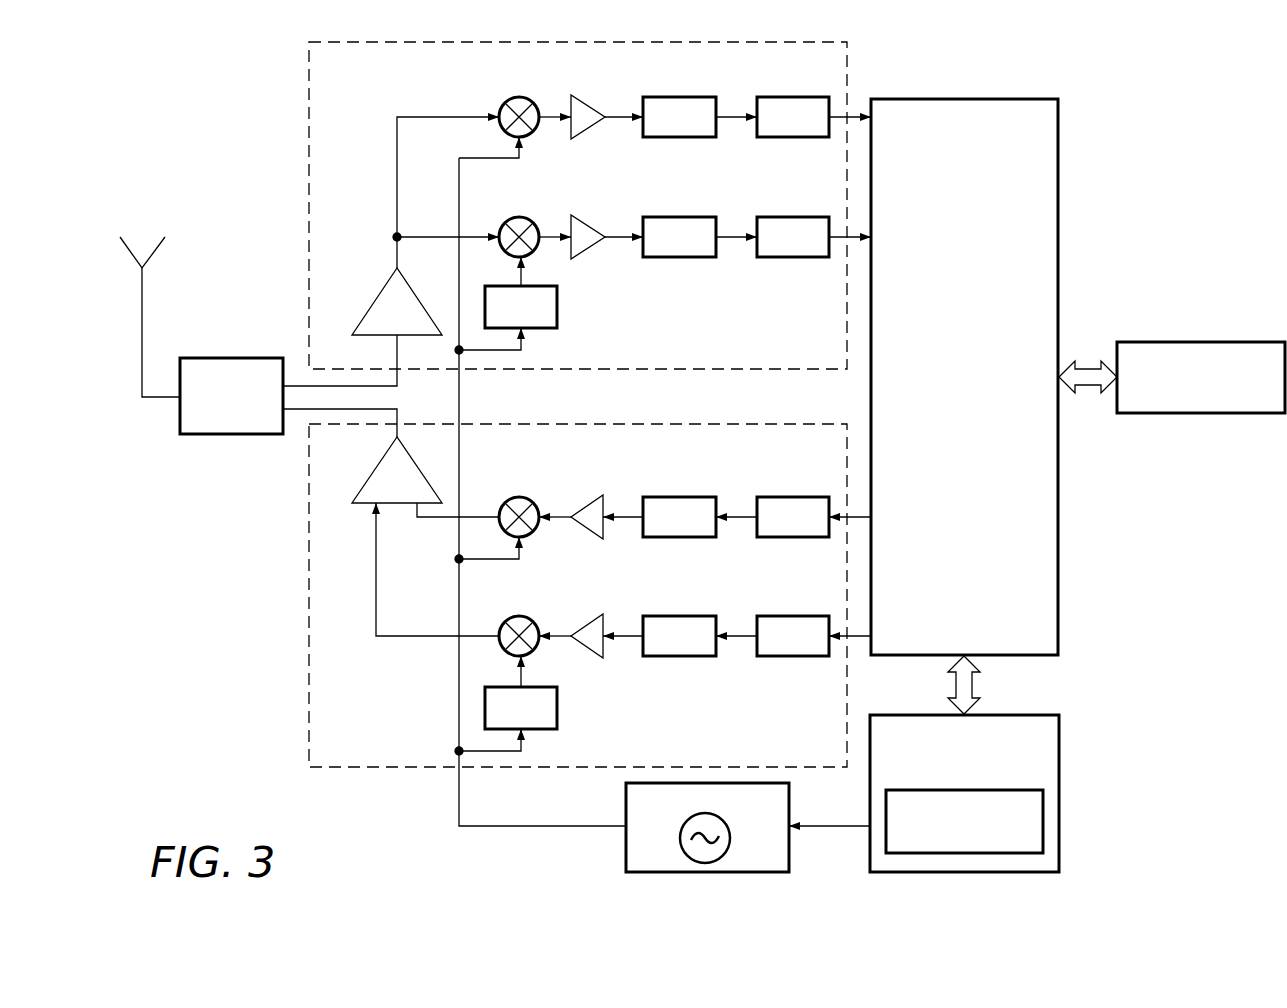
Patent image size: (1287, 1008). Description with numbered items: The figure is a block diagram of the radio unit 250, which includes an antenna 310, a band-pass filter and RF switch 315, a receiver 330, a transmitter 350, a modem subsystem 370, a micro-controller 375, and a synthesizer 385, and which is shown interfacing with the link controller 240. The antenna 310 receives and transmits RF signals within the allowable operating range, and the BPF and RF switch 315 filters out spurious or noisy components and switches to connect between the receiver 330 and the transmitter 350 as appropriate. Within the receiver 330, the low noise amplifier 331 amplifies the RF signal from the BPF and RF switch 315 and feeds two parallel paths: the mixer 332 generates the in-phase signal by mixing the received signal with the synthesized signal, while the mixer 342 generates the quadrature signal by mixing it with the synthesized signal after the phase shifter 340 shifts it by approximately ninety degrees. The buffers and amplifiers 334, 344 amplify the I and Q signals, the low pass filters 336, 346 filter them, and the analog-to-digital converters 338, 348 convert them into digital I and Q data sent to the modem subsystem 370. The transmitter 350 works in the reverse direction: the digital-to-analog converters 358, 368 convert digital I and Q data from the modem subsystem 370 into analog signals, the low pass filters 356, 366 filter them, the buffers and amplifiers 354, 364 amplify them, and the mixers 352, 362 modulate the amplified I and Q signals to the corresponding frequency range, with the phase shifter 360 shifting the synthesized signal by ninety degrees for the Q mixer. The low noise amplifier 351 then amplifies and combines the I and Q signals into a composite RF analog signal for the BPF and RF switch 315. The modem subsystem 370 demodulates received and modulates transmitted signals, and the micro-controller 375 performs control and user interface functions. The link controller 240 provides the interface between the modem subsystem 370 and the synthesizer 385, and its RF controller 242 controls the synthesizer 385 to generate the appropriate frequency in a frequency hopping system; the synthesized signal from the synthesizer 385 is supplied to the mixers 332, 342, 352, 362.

The radio unit 250 is at (1172, 78).
The receiver 330 is at (310, 67).
The transmitter 350 is at (310, 533).
The antenna 310 is at (182, 317).
The band-pass filter and radio frequency switch 315 is at (254, 366).
The low noise amplifier 331 is at (394, 281).
The mixer 332 is at (522, 98).
The buffer and amplifier 334 is at (587, 102).
The low pass filter 336 is at (650, 100).
The analog-to-digital converter 338 is at (764, 100).
The phase shifter 340 is at (557, 293).
The mixer 342 is at (522, 218).
The buffer and amplifier 344 is at (587, 222).
The low pass filter 346 is at (650, 220).
The analog-to-digital converter 348 is at (764, 220).
The low noise amplifier 351 is at (394, 452).
The mixer 352 is at (522, 497).
The buffer and amplifier 354 is at (588, 500).
The low pass filter 356 is at (650, 500).
The digital-to-analog converter 358 is at (764, 500).
The phase shifter 360 is at (557, 693).
The mixer 362 is at (522, 616).
The buffer and amplifier 364 is at (588, 620).
The low pass filter 366 is at (650, 619).
The digital-to-analog converter 368 is at (764, 619).
The modem subsystem 370 is at (902, 106).
The micro-controller 375 is at (1131, 350).
The link controller 240 is at (1031, 723).
The RF controller 242 is at (1027, 802).
The synthesizer 385 is at (782, 793).